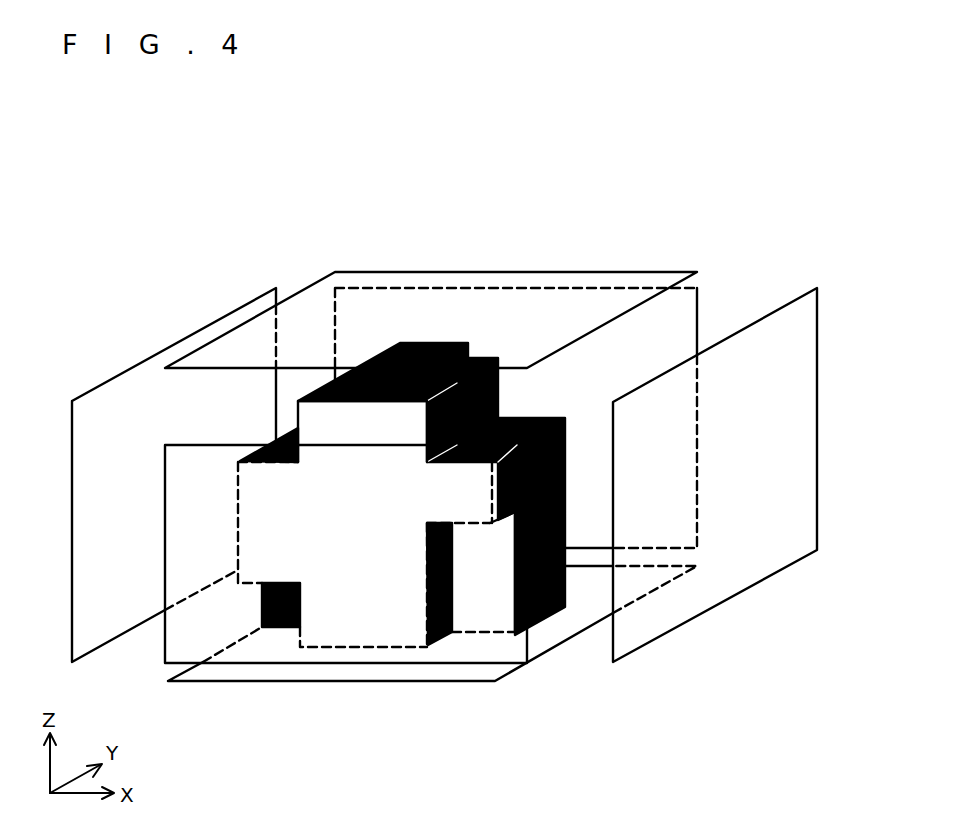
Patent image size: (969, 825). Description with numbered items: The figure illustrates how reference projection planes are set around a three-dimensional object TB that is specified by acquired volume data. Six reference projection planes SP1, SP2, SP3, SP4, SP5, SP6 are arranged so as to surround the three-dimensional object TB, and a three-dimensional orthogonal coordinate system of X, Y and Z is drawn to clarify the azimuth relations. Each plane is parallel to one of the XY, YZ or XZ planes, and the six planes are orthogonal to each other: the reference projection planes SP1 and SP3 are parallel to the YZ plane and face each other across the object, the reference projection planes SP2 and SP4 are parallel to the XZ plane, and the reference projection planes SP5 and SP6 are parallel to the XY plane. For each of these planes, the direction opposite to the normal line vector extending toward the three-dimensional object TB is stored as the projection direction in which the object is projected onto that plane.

The reference projection plane SP1 is at (172, 345).
The reference projection plane SP2 is at (163, 637).
The reference projection plane SP3 is at (818, 417).
The reference projection plane SP4 is at (698, 288).
The reference projection plane SP5 is at (518, 272).
The reference projection plane SP6 is at (332, 682).
The three-dimensional object TB is at (546, 407).